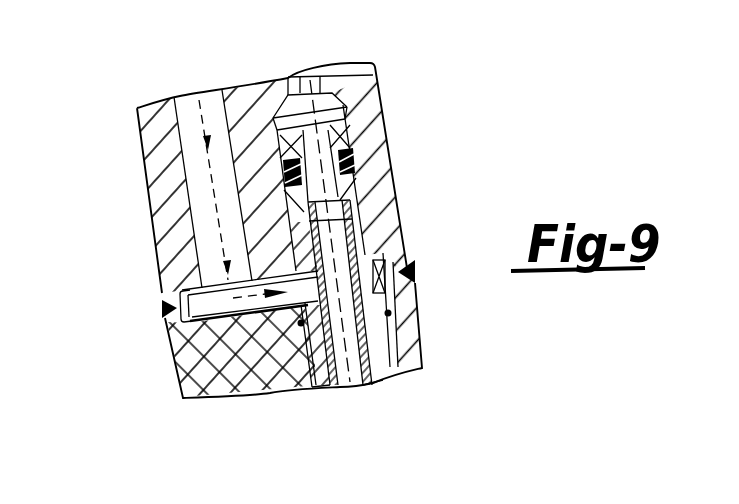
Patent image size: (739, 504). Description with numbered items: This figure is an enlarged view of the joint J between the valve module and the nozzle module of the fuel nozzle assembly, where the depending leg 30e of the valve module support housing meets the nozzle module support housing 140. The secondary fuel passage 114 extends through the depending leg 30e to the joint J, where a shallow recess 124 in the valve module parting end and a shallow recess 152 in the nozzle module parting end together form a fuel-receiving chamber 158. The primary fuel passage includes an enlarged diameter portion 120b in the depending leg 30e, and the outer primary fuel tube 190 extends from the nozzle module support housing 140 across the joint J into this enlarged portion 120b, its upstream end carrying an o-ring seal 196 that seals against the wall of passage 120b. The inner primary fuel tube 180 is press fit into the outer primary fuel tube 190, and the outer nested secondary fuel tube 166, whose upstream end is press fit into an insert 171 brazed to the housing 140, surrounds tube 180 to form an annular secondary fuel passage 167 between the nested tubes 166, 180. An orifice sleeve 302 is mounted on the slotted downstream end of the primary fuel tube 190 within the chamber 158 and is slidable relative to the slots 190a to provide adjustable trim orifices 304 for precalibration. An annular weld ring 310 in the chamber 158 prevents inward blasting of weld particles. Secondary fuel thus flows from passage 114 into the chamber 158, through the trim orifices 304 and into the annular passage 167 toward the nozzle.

The depending leg 30e is at (160, 157).
The nozzle module support housing 140 is at (403, 357).
The shallow recess 152 is at (185, 368).
The secondary fuel passage 114 is at (187, 117).
The weld ring 310 is at (160, 290).
The shallow recess 124 is at (195, 287).
The fuel-receiving chamber 158 is at (237, 316).
The trim orifices 304 is at (274, 326).
The joint J is at (160, 313).
The enlarged diameter portion of primary fuel passage 120b is at (296, 88).
The inner primary fuel tube 180 is at (385, 183).
The outer primary fuel tube 190 is at (362, 190).
The o-ring seal 196 is at (355, 160).
The orifice sleeve 302 is at (352, 207).
The slots 190a is at (400, 251).
The insert 171 is at (392, 313).
The outer nested secondary fuel tube 166 is at (385, 375).
The annular secondary fuel passage 167 is at (333, 387).